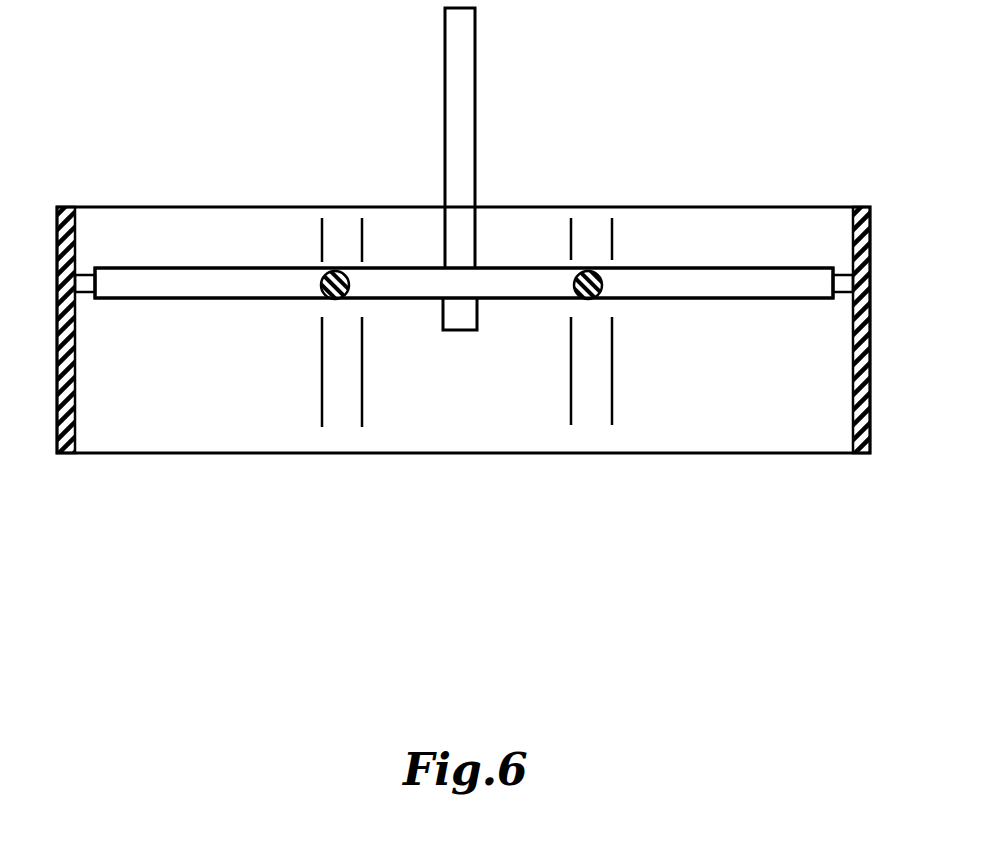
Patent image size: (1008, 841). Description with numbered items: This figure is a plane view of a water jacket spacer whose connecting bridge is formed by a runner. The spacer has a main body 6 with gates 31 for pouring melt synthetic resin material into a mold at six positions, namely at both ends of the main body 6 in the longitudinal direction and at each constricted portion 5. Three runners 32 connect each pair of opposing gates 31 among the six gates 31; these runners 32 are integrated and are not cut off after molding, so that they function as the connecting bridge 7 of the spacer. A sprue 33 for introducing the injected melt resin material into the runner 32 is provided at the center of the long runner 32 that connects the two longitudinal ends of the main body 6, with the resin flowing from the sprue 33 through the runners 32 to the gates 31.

The constricted portion 5 is at (352, 396).
The main body 6 is at (647, 228).
The connecting bridge 7 is at (464, 283).
The gate 31 is at (85, 282).
The runner 32 is at (325, 269).
The sprue 33 is at (458, 94).